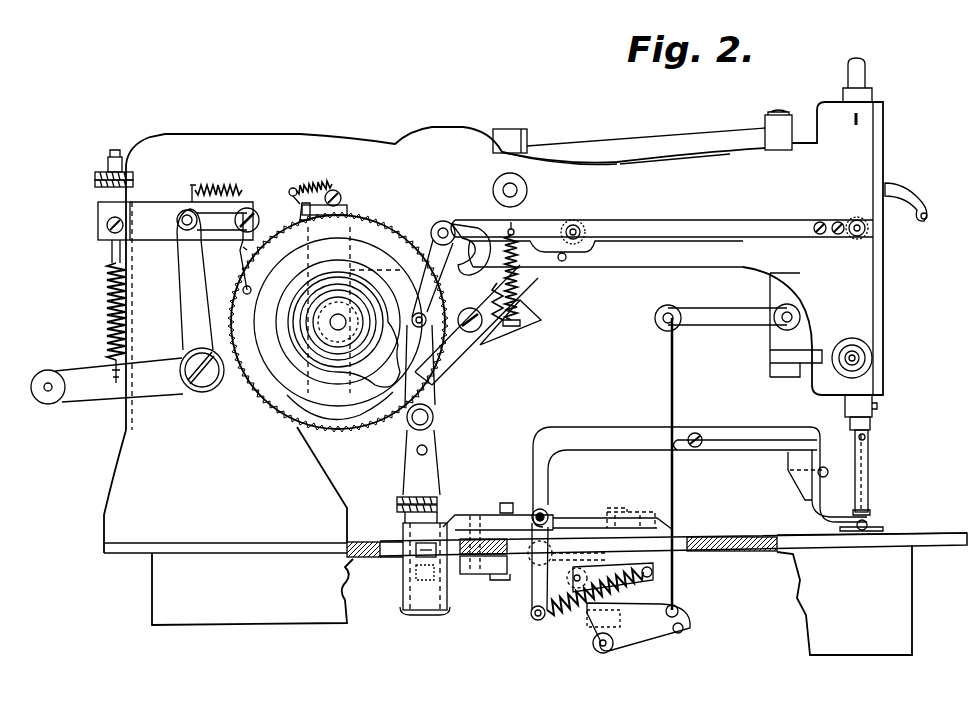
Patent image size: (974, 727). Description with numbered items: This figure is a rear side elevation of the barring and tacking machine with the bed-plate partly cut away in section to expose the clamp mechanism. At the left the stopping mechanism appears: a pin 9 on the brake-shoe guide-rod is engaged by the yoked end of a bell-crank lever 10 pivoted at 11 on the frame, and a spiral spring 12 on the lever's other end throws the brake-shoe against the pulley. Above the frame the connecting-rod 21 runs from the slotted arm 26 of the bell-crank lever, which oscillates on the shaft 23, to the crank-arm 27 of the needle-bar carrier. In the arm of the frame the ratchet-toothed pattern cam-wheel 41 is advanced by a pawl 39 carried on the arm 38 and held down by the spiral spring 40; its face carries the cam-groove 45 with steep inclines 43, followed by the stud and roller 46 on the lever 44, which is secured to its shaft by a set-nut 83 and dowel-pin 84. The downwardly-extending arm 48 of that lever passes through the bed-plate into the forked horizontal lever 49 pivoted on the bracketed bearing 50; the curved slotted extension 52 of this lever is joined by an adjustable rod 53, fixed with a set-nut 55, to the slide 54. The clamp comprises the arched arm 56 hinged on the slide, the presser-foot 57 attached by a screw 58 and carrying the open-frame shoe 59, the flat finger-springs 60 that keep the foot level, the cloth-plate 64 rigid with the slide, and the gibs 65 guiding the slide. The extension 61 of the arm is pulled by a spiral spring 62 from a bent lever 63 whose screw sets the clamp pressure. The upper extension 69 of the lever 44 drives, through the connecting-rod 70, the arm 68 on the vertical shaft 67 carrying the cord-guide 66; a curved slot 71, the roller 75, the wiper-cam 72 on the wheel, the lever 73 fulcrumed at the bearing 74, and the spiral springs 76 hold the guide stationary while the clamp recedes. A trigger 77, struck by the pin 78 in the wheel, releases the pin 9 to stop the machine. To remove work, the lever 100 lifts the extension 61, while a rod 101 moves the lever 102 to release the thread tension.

The pin 9 is at (187, 215).
The bell-crank lever 10 is at (182, 280).
The pivot 11 is at (202, 388).
The spiral spring 12 is at (112, 320).
The connecting-rod 21 is at (655, 141).
The shaft 23 is at (523, 189).
The arm of bell-crank lever 26 is at (522, 140).
The crank-arm 27 is at (788, 137).
The arm 38 is at (348, 206).
The pawl 39 is at (302, 209).
The spiral spring 40 is at (316, 187).
The ratchet-toothed wheel 41 is at (393, 228).
The inclines 43 is at (385, 370).
The lever 44 is at (434, 390).
The cam-groove 45 is at (346, 268).
The stud and roller 46 is at (412, 320).
The downwardly-extending arm 48 is at (438, 461).
The horizontal lever 49 is at (402, 553).
The bracketed bearing 50 is at (450, 570).
The undercut slotted extension 52 is at (424, 558).
The rod 53 is at (445, 522).
The slide 54 is at (480, 533).
The set-nut 55 is at (410, 497).
The arm 56 is at (610, 433).
The presser-foot 57 is at (818, 458).
The screw 58 is at (824, 473).
The shoe 59 is at (878, 528).
The flat finger-springs 60 is at (760, 442).
The extension 61 is at (610, 577).
The spiral spring 62 is at (563, 614).
The bent lever 63 is at (538, 587).
The cloth-plate 64 is at (897, 530).
The gibs 65 is at (583, 523).
The cord-guide 66 is at (870, 490).
The vertical shaft 67 is at (876, 418).
The arm 68 is at (857, 219).
The upper extension 69 is at (440, 228).
The connecting-rod 70 is at (723, 228).
The curved slot 71 is at (464, 264).
The wiper-cam 72 is at (396, 243).
The lever 73 is at (460, 354).
The bearing 74 is at (480, 327).
The roller 75 is at (583, 224).
The spiral springs 76 is at (518, 290).
The trigger 77 is at (243, 246).
The pin 78 is at (243, 289).
The set-nut 83 is at (435, 417).
The dowel-pin 84 is at (430, 450).
The lever 100 is at (602, 613).
The rod 101 is at (677, 369).
The lever 102 is at (727, 322).